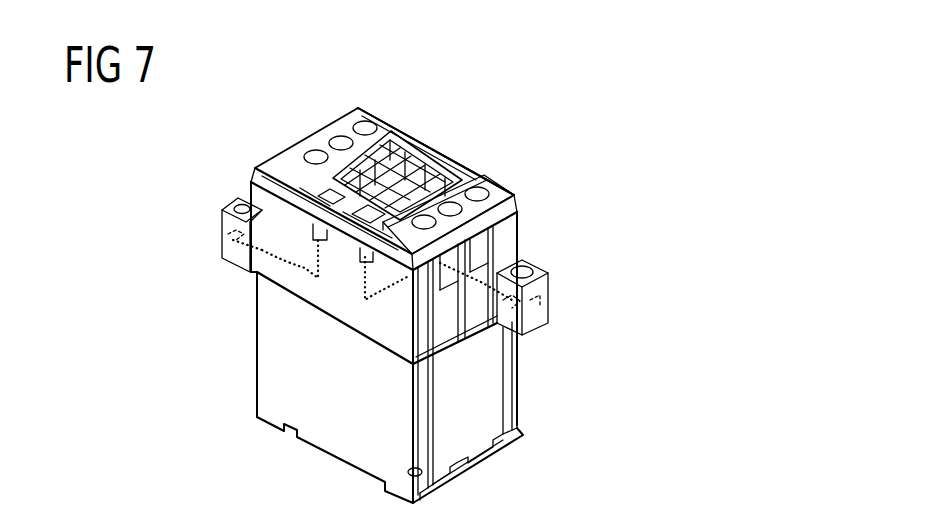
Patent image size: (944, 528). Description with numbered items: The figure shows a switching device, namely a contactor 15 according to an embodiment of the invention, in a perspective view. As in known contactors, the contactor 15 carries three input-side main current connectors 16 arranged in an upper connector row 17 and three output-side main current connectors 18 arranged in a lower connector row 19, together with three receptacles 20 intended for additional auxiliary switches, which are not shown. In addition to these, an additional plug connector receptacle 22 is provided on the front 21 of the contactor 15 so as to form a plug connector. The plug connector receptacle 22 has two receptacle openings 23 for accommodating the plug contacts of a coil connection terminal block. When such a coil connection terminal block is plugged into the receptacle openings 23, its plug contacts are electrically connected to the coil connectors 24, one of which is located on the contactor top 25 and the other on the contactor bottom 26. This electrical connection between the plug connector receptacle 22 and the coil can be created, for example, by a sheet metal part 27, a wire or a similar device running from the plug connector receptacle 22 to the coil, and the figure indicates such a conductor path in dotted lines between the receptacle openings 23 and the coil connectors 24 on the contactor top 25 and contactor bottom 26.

The contactor 15 is at (496, 127).
The input-side main current connectors 16 is at (362, 122).
The upper connector row 17 is at (279, 172).
The output-side main current connectors 18 is at (478, 189).
The lower connector row 19 is at (405, 240).
The receptacles for additional auxiliary switches 20 is at (408, 135).
The front 21 is at (385, 112).
The plug connector receptacle 22 is at (297, 278).
The receptacle openings 23 is at (310, 184).
The coil connectors 24 is at (222, 235).
The contactor top 25 is at (250, 320).
The contactor bottom 26 is at (476, 383).
The sheet metal part 27 is at (284, 267).